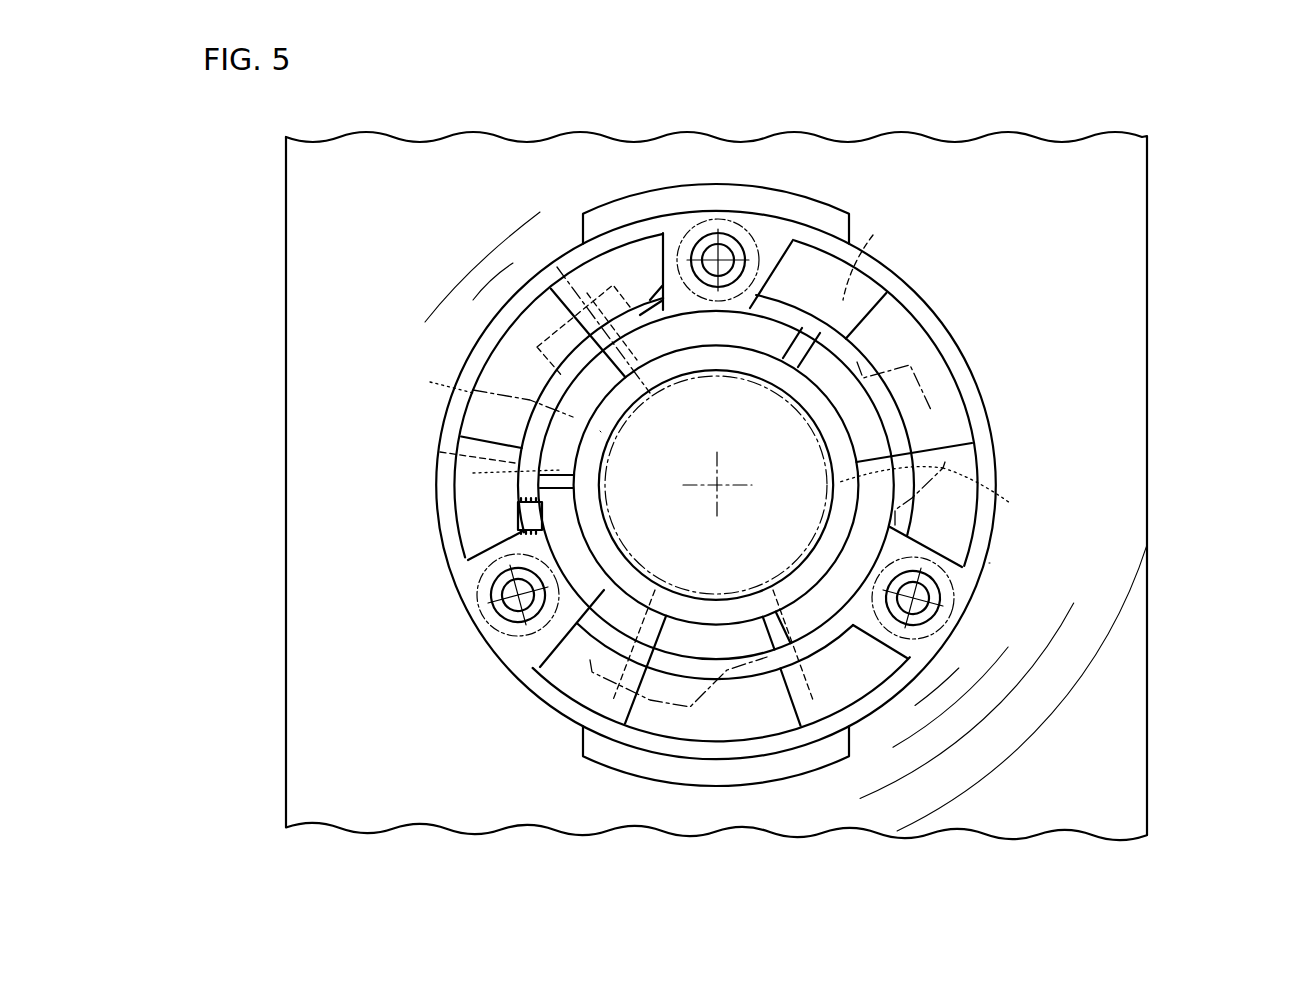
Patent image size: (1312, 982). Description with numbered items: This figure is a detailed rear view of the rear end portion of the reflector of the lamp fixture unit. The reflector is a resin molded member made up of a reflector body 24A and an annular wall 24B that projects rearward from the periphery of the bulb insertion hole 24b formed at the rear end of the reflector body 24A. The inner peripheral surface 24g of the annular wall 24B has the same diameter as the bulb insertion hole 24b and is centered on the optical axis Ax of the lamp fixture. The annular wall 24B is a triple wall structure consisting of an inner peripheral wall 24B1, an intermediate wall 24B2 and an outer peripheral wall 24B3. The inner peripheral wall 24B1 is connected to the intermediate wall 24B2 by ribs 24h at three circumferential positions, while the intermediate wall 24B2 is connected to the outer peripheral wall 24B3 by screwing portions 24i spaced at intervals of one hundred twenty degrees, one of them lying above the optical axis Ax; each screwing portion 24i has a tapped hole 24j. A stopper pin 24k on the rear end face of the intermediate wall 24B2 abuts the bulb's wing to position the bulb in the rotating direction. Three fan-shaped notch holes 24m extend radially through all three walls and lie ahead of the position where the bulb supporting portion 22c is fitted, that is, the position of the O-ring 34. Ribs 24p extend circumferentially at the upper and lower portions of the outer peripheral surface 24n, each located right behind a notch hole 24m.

The reflector body 24A is at (1150, 335).
The annular wall 24B is at (988, 563).
The inner peripheral wall 24B1 is at (812, 400).
The intermediate wall 24B2 is at (885, 405).
The outer peripheral wall 24B3 is at (716, 485).
The rib 24p is at (657, 202).
The tapped hole 24j is at (720, 250).
The notch hole 24m is at (833, 322).
The screwing portion 24i is at (677, 288).
The outer peripheral surface 24n is at (468, 353).
The O-ring 34 is at (603, 433).
The inner peripheral surface 24g is at (627, 407).
The bulb insertion hole 24b is at (716, 485).
The rib 24h is at (553, 485).
The optical axis Ax is at (735, 498).
The stopper pin 24k is at (530, 518).
The bulb supporting portion 22c is at (520, 648).